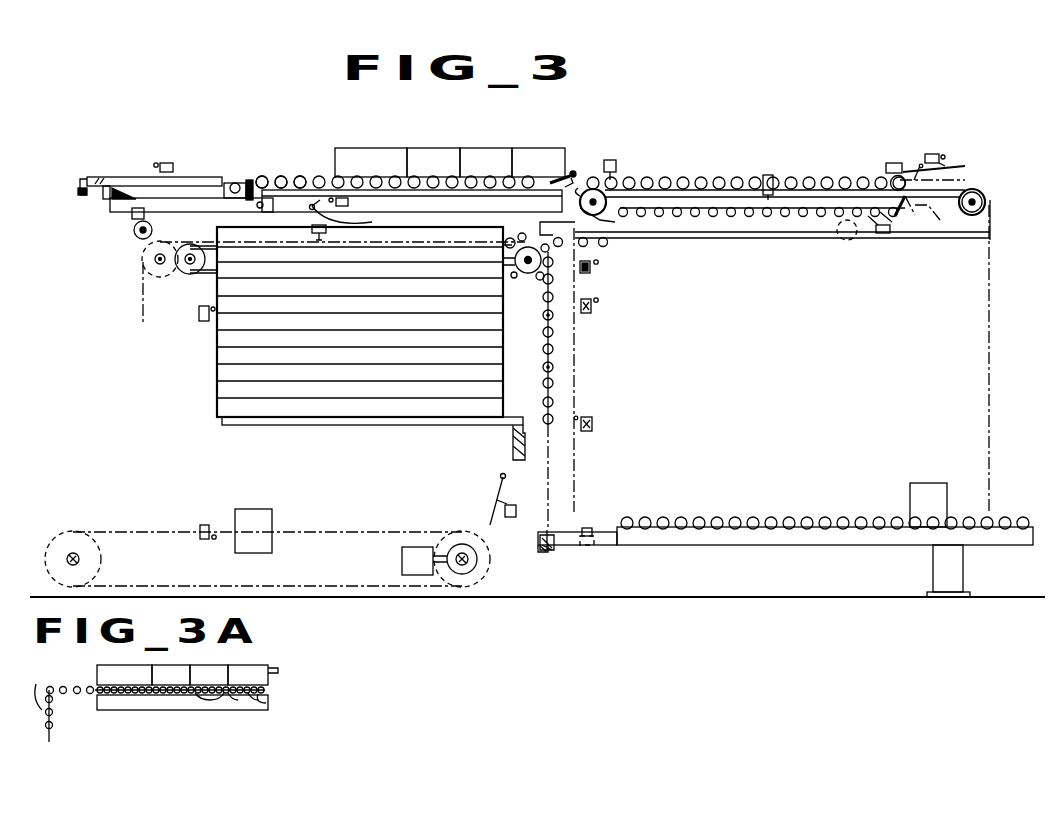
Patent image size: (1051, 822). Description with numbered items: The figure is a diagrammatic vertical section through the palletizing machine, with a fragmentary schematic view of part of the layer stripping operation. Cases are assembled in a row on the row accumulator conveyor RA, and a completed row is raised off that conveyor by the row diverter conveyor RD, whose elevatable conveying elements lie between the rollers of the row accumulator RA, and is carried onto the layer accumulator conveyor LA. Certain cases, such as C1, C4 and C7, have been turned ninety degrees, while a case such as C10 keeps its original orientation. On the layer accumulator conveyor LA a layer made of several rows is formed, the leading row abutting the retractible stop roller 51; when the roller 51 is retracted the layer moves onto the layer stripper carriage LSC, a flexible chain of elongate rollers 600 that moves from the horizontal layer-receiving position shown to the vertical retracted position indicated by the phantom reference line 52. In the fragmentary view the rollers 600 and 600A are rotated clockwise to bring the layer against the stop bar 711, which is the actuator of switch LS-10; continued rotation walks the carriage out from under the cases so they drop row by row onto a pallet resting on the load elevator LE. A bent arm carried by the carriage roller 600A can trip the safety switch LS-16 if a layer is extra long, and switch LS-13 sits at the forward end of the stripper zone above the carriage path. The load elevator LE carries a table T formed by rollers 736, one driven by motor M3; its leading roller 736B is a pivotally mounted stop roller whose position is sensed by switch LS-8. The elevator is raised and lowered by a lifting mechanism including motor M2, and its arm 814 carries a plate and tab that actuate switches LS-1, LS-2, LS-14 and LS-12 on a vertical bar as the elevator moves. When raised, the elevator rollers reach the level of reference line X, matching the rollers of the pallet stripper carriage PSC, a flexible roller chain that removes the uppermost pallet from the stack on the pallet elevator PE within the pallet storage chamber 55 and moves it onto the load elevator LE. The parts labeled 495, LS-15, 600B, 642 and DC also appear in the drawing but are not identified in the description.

In FIG. 3, the row accumulator conveyor RA is at (128, 173).
In FIG. 3, the row diverter conveyor RD is at (112, 208).
In FIG. 3, the layer accumulator conveyor LA is at (258, 178).
In FIG. 3, the rollers 495 is at (312, 176).
In FIG. 3, the case C10 is at (372, 152).
In FIG. 3A, the case C10 is at (138, 660).
In FIG. 3, the case C7 is at (428, 152).
In FIG. 3A, the case C7 is at (180, 660).
In FIG. 3, the case C4 is at (481, 152).
In FIG. 3A, the case C4 is at (208, 672).
In FIG. 3, the case C1 is at (533, 152).
In FIG. 3A, the case C1 is at (248, 672).
In FIG. 3, the retractible stop roller 51 is at (572, 172).
In FIG. 3, the safety switch LS-16 is at (612, 160).
In FIG. 3, the layer stripper carriage LSC is at (676, 180).
In FIG. 3, the rollers 600 is at (764, 178).
In FIG. 3A, the rollers 600 is at (78, 686).
In FIG. 3, the limit switch 15 LS-15 is at (768, 174).
In FIG. 3, the chain section B 600B is at (892, 178).
In FIG. 3A, the chain section B 600B is at (262, 693).
In FIG. 3, the switch LS-13 is at (889, 162).
In FIG. 3, the switch LS-10 is at (931, 152).
In FIG. 3, the stop bar 711 is at (965, 166).
In FIG. 3A, the stop bar 711 is at (276, 668).
In FIG. 3, the sprocket 642 is at (975, 201).
In FIG. 3, the rollers 736 is at (745, 220).
In FIG. 3, the table T is at (805, 235).
In FIG. 3, the motor M3 is at (838, 236).
In FIG. 3, the switch LS-8 is at (880, 233).
In FIG. 3, the leading roller 736B is at (930, 222).
In FIG. 3, the reference line X is at (975, 260).
In FIG. 3, the switch LS-2 is at (592, 268).
In FIG. 3, the switch LS-1 is at (586, 298).
In FIG. 3, the pallet stripper carriage PSC is at (556, 380).
In FIG. 3, the phantom reference line 52 is at (578, 385).
In FIG. 3, the switch LS-12 is at (586, 416).
In FIG. 3, the pallet elevator PE is at (215, 423).
In FIG. 3, the pallet storage chamber 55 is at (218, 459).
In FIG. 3, the arm 814 is at (556, 533).
In FIG. 3, the switch LS-14 is at (590, 527).
In FIG. 3, the load elevator LE is at (806, 520).
In FIG. 3, the motor M2 is at (944, 492).
In FIG. 3, the drive column DC is at (1000, 520).
In FIG. 3A, the roller 600A is at (245, 700).